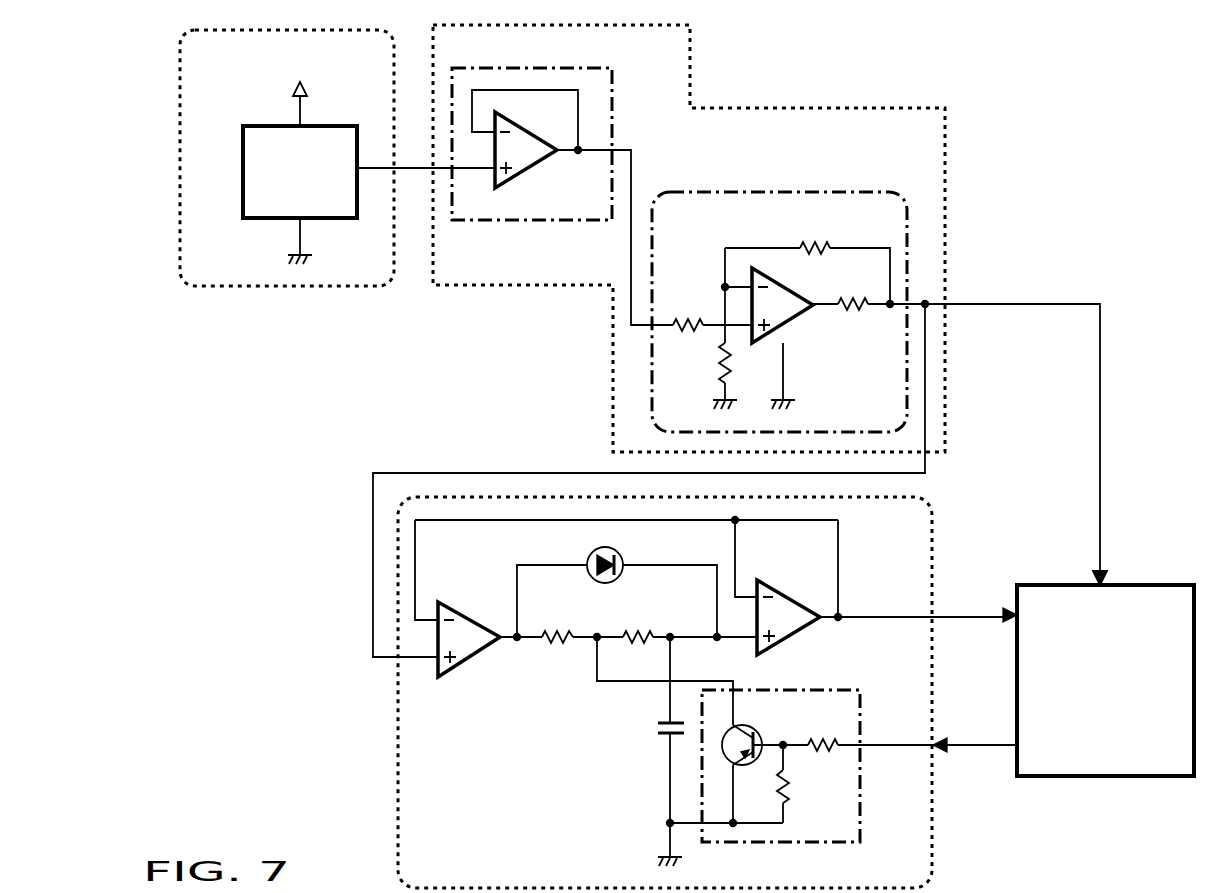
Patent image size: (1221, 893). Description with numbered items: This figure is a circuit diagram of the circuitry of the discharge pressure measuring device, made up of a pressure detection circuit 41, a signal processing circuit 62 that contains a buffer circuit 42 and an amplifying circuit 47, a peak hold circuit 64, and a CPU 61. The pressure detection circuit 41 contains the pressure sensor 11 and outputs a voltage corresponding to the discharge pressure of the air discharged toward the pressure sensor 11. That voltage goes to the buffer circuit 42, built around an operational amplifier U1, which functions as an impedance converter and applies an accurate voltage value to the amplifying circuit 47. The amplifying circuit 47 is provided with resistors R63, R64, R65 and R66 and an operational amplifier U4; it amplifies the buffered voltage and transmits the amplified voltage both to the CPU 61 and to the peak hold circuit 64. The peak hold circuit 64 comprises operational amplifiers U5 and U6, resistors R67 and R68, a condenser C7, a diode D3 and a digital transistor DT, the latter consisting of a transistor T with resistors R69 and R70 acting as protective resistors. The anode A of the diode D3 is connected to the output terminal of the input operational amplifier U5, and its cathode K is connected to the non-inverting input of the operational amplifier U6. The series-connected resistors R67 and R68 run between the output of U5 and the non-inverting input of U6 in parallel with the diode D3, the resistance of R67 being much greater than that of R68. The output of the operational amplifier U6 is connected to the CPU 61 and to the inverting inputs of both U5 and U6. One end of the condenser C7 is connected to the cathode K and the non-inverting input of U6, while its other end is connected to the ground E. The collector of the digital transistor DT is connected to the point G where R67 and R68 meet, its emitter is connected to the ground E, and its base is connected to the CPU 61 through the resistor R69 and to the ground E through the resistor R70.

The pressure sensor 11 is at (243, 172).
The pressure detection circuit 41 is at (258, 289).
The buffer circuit 42 is at (562, 196).
The amplifying circuit 47 is at (790, 287).
The CPU 61 is at (1086, 777).
The signal processing circuit 62 is at (838, 108).
The peak hold circuit 64 is at (397, 777).
The operational amplifier U1 is at (527, 171).
The operational amplifier U4 is at (790, 321).
The operational amplifier U5 is at (492, 600).
The operational amplifier U6 is at (812, 586).
The resistor R63 is at (700, 376).
The resistor R64 is at (869, 288).
The resistor R65 is at (807, 258).
The resistor R66 is at (708, 309).
The resistor R67 is at (577, 621).
The resistor R68 is at (686, 621).
The resistor R69 is at (908, 727).
The resistor R70 is at (813, 784).
The condenser C7 is at (654, 747).
The diode D3 is at (623, 558).
The transistor T is at (745, 767).
The digital transistor DT is at (859, 766).
The anode A is at (517, 641).
The point G is at (597, 641).
The cathode K is at (716, 633).
The ground E is at (666, 858).